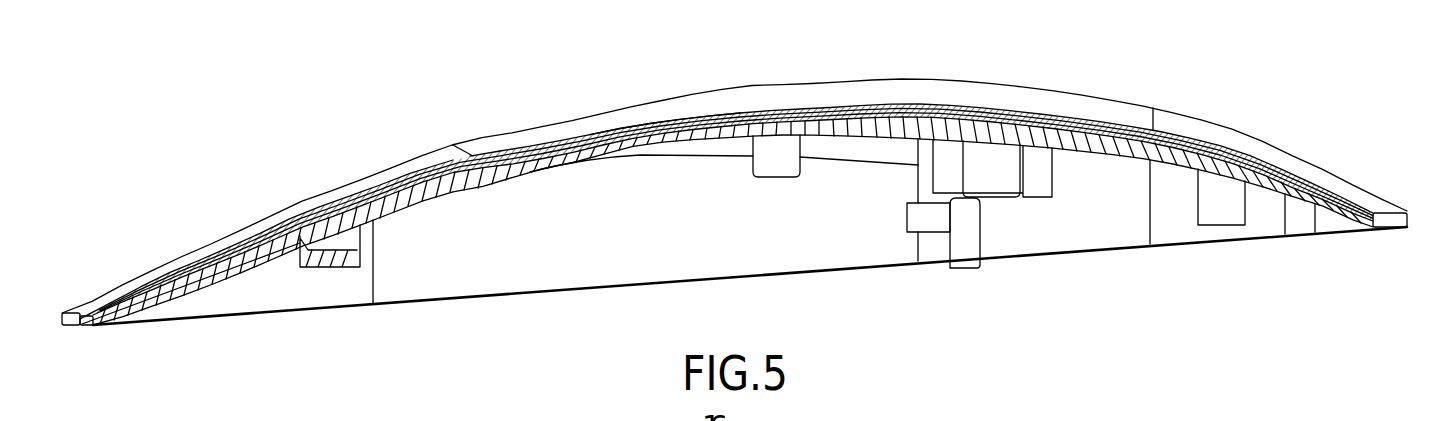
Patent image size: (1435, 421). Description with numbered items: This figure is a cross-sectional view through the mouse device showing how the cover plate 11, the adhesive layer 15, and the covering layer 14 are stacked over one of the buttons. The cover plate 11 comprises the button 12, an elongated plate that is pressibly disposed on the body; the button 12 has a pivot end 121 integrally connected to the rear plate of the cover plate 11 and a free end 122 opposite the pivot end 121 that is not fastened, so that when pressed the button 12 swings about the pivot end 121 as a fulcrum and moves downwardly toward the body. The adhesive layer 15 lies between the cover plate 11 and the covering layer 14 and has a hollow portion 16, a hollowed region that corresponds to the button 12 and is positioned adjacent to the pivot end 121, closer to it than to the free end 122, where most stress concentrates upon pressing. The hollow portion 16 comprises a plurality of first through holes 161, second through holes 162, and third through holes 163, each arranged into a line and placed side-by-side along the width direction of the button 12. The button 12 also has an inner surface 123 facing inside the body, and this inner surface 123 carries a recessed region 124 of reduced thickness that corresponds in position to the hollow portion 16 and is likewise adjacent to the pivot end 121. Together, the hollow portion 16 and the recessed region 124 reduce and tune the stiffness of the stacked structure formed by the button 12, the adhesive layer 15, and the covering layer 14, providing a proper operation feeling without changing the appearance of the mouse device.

The cover plate 11 is at (1250, 177).
The button 12 is at (410, 205).
The pivot end 121 is at (740, 136).
The free end 122 is at (93, 326).
The inner surface 123 is at (457, 194).
The recessed region 124 is at (648, 141).
The covering layer 14 is at (600, 133).
The adhesive layer 15 is at (508, 158).
The hollow portion 16 is at (726, 161).
The first through holes 161 is at (600, 48).
The second through holes 162 is at (680, 126).
The third through holes 163 is at (645, 126).